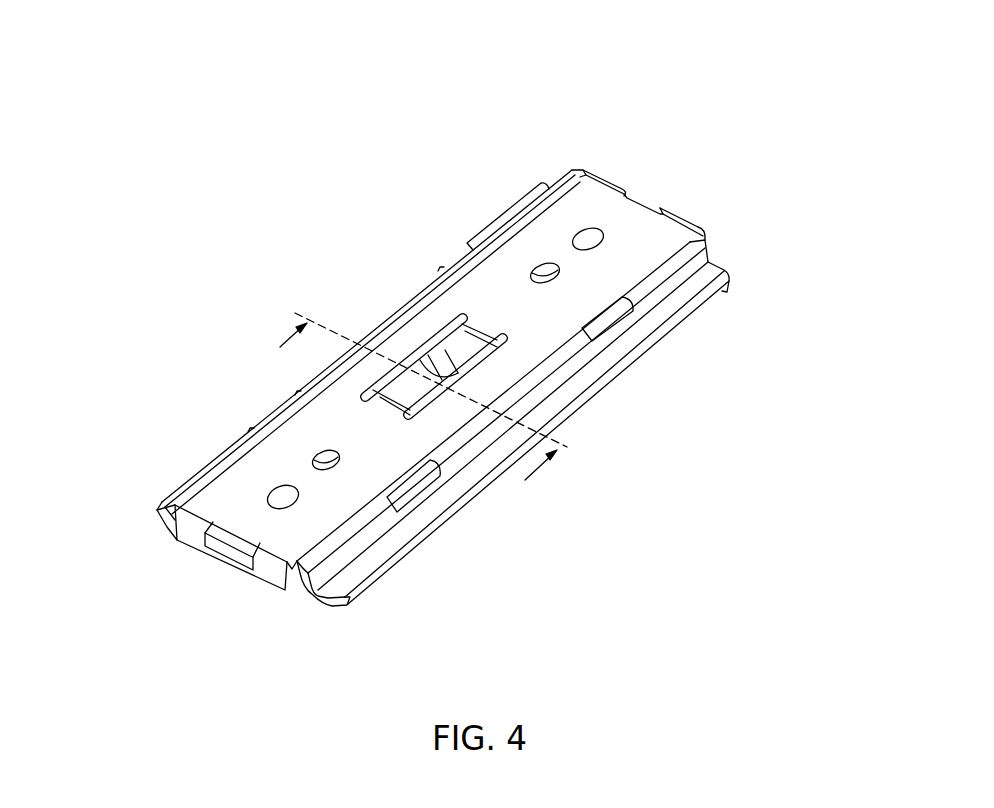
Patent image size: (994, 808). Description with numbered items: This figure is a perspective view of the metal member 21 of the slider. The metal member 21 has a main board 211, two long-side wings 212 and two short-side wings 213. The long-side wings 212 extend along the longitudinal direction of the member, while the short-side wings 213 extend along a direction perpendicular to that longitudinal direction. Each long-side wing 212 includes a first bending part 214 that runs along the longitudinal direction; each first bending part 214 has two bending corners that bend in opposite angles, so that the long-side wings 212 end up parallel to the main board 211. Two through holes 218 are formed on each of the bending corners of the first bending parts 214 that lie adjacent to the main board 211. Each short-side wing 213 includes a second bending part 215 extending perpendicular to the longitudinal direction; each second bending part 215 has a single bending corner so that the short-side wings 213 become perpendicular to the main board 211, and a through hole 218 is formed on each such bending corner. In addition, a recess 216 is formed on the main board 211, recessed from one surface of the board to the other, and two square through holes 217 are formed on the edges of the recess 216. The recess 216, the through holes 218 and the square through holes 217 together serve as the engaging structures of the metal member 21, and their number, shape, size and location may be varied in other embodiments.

The metal member 21 is at (650, 88).
The main board 211 is at (573, 195).
The long-side wing 212 is at (522, 197).
The short-side wing 213 is at (706, 232).
The first bending part 214 is at (353, 530).
The second bending part 215 is at (187, 522).
The recess 216 is at (447, 372).
The square through hole 217 is at (420, 363).
The through hole 218 is at (472, 238).